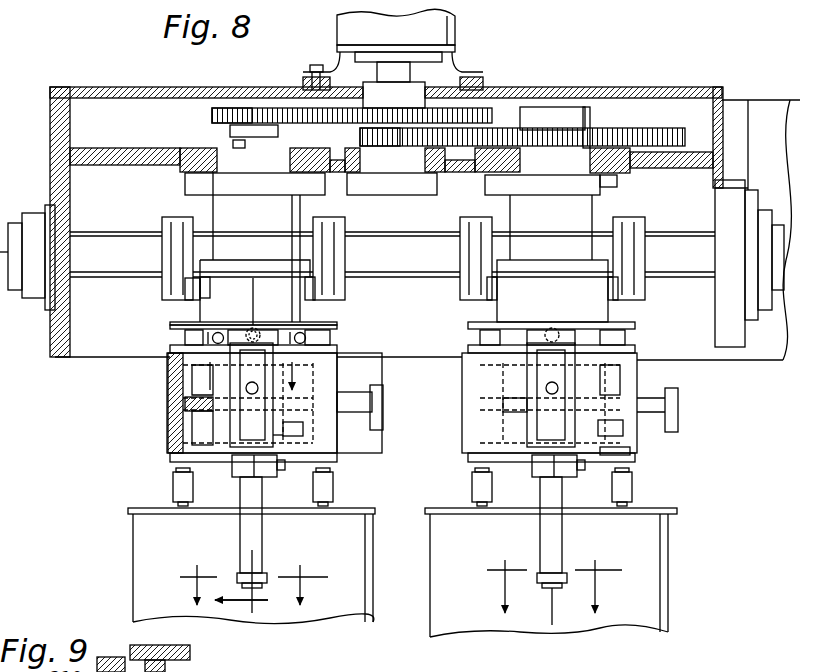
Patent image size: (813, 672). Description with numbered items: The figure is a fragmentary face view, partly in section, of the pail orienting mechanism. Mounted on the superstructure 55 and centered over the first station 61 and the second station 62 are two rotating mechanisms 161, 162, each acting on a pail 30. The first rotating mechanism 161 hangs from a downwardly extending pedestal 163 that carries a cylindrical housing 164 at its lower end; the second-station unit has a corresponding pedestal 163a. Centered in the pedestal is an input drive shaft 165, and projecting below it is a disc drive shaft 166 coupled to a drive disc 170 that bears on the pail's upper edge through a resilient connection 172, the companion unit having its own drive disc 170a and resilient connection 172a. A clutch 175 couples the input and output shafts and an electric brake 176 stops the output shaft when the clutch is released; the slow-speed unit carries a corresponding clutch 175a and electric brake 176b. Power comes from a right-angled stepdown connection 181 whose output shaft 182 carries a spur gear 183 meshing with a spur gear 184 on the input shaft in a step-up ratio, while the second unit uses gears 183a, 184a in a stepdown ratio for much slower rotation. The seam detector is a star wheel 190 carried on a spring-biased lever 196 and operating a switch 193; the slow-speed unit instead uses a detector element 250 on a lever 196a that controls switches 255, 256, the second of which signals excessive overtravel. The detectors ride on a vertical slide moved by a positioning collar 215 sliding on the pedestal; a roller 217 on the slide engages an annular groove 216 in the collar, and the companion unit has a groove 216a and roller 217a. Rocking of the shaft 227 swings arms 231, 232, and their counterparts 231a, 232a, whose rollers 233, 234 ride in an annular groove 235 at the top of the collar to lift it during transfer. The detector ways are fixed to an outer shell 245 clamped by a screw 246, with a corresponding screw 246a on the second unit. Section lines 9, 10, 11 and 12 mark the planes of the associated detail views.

In FIG. 8, the superstructure 55 is at (52, 150).
In FIG. 8, the right-angled stepdown connection 181 is at (455, 30).
In FIG. 8, the output shaft 182 is at (396, 27).
In FIG. 8, the spur gear 183 is at (490, 108).
In FIG. 8, the spur gear 183a is at (360, 136).
In FIG. 8, the spur gear 184 is at (217, 108).
In FIG. 8, the spur gear 184a is at (646, 140).
In FIG. 8, the input drive shaft 165 is at (233, 147).
In FIG. 8, the pedestal 163 is at (215, 205).
In FIG. 8, the pedestal 163a is at (598, 207).
In FIG. 8, the shaft 227 is at (110, 238).
In FIG. 8, the arm 231 is at (167, 283).
In FIG. 8, the arm 231a is at (468, 300).
In FIG. 8, the arm 232 is at (340, 232).
In FIG. 8, the arm 232a is at (645, 293).
In FIG. 8, the roller 233 is at (200, 305).
In FIG. 8, the roller 234 is at (305, 290).
In FIG. 8, the annular groove 235 is at (210, 290).
In FIG. 8, the positioning collar 215 is at (316, 321).
In FIG. 8, the annular groove 216 is at (333, 330).
In FIG. 9, the annular groove 216 is at (120, 660).
In FIG. 8, the annular groove 216a is at (635, 330).
In FIG. 8, the roller 217 is at (255, 335).
In FIG. 8, the roller 217a is at (572, 315).
In FIG. 8, the rotating mechanism 161 is at (165, 442).
In FIG. 8, the rotating mechanism 162 is at (465, 447).
In FIG. 8, the clutch 175 is at (197, 388).
In FIG. 8, the clutch 175a is at (603, 383).
In FIG. 8, the electric brake 176 is at (190, 410).
In FIG. 8, the electric brake 176b is at (497, 432).
In FIG. 8, the cylindrical housing 164 is at (185, 412).
In FIG. 8, the switch 193 is at (305, 430).
In FIG. 8, the outer shell 245 is at (340, 380).
In FIG. 8, the clamping screw 246 is at (383, 397).
In FIG. 8, the clamping screw 246a is at (680, 413).
In FIG. 8, the switch 255 is at (637, 440).
In FIG. 8, the switch 256 is at (632, 455).
In FIG. 8, the disc drive shaft 166 is at (238, 508).
In FIG. 8, the lever 196 is at (255, 548).
In FIG. 8, the lever 196a is at (555, 543).
In FIG. 8, the star wheel 190 is at (242, 580).
In FIG. 8, the detector element 250 is at (560, 580).
In FIG. 8, the resilient connection 172 is at (170, 487).
In FIG. 8, the resilient connection 172a is at (632, 490).
In FIG. 8, the drive disc 170 is at (145, 508).
In FIG. 8, the drive disc 170a is at (462, 510).
In FIG. 8, the pail 30 is at (140, 553).
In FIG. 8, the first station 61 is at (85, 510).
In FIG. 8, the second station 62 is at (692, 505).
In FIG. 8, the section line 9- 9 is at (215, 308).
In FIG. 8, the section line 10- 10 is at (257, 338).
In FIG. 8, the section line 11- 11 is at (251, 579).
In FIG. 8, the section line 12- 12 is at (550, 586).